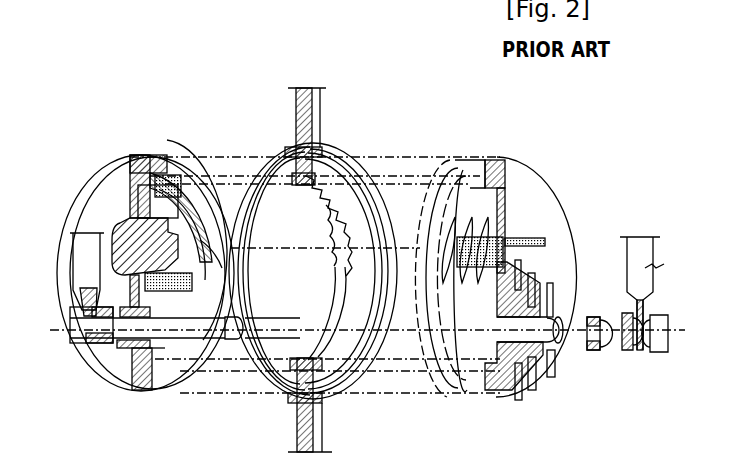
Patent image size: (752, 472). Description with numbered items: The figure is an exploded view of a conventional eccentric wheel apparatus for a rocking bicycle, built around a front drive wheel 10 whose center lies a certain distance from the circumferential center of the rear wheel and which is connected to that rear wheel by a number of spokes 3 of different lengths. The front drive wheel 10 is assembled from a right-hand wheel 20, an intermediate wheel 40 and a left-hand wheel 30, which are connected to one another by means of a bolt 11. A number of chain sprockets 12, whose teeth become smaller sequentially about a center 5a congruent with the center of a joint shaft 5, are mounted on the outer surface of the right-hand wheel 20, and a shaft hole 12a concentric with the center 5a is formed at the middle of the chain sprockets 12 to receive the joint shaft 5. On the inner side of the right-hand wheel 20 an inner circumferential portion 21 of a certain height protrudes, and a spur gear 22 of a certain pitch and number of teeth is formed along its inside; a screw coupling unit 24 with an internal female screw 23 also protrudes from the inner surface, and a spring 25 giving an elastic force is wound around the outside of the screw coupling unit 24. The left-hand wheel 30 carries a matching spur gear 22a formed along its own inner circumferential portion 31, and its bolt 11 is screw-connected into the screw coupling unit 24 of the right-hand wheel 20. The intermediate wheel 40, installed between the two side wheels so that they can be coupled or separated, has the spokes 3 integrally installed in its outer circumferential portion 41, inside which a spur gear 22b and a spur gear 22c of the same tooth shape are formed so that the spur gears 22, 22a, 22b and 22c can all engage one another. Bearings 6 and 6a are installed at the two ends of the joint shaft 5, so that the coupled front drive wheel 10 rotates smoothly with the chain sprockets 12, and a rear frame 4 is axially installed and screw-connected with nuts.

The front drive wheel 10 is at (226, 92).
The left-hand wheel 30 is at (172, 153).
The bolt 11 is at (158, 237).
The rear frame 4 is at (86, 260).
The bearing 6a is at (113, 345).
The joint shaft 5 is at (172, 325).
The center 5a is at (295, 330).
The spur gear 22 is at (452, 175).
The spur gear 22a is at (237, 190).
The spur gear 22b is at (386, 240).
The spur gear 22c is at (347, 250).
The inner circumferential portion 31 is at (212, 248).
The intermediate wheel 40 is at (348, 153).
The spokes 3 is at (297, 430).
The outer circumferential portion 41 is at (323, 416).
The spring 25 is at (422, 320).
The right-hand wheel 20 is at (525, 153).
The inner circumferential portion 21 is at (471, 158).
The screw coupling unit 24 is at (472, 305).
The female screw 23 is at (510, 233).
The chain sprockets 12 is at (520, 413).
The shaft hole 12a is at (505, 320).
The bearing 6 is at (590, 352).